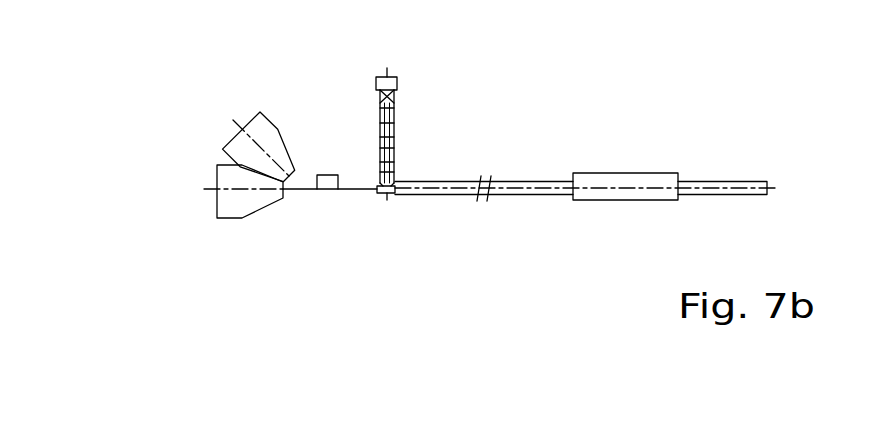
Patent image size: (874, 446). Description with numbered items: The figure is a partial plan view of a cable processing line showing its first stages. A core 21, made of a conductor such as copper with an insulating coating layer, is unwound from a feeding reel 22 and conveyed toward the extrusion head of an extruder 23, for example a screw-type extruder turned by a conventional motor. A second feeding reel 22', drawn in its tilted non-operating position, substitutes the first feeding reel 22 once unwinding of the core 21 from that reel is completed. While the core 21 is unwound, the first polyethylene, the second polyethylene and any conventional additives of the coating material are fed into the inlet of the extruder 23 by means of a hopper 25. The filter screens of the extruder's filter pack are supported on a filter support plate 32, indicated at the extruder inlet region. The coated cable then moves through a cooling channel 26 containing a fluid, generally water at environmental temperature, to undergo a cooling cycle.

The core 21 is at (358, 191).
The feeding reel 22 is at (242, 229).
The second feeding reel 22' is at (267, 111).
The extruder 23 is at (389, 138).
The hopper 25 is at (392, 100).
The cooling channel 26 is at (740, 182).
The filter support plate 32 is at (373, 178).